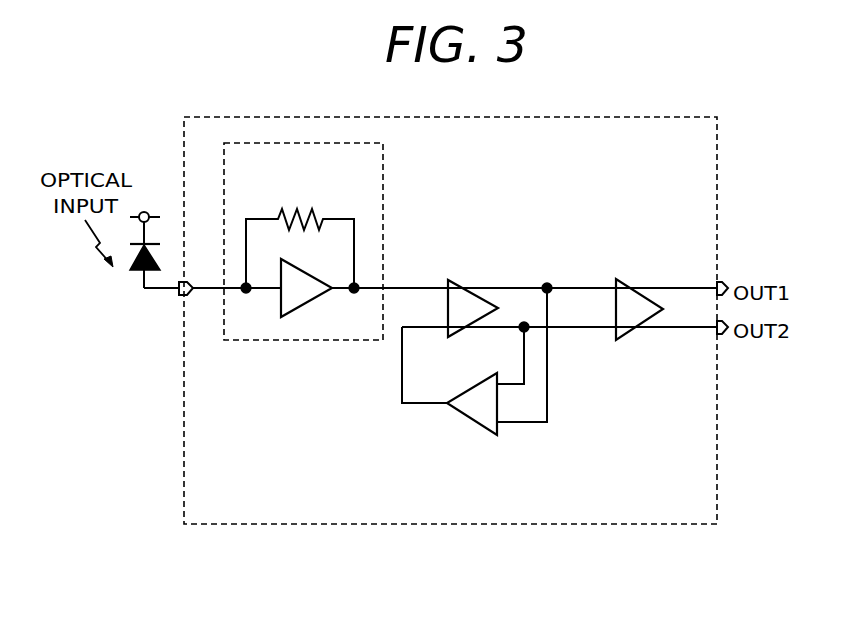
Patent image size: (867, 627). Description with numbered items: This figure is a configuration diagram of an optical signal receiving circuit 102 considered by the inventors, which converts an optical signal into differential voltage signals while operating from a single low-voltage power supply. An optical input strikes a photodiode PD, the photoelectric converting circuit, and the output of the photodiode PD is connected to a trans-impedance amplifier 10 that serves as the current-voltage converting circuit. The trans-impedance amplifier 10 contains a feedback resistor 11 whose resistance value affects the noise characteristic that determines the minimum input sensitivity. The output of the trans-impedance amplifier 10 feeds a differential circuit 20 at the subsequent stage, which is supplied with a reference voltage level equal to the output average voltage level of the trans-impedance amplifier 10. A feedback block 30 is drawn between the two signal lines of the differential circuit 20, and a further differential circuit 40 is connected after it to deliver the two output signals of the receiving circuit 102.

The optical receiver amplifier circuit 102 is at (183, 437).
The photodiode PD is at (134, 273).
The trans-impedance amplifier 10 is at (303, 270).
The feedback resistor 11 is at (300, 211).
The differential circuit 20 is at (458, 286).
The feedback amplifier (offset cancellation) 30 is at (471, 422).
The differential circuit 40 is at (627, 286).